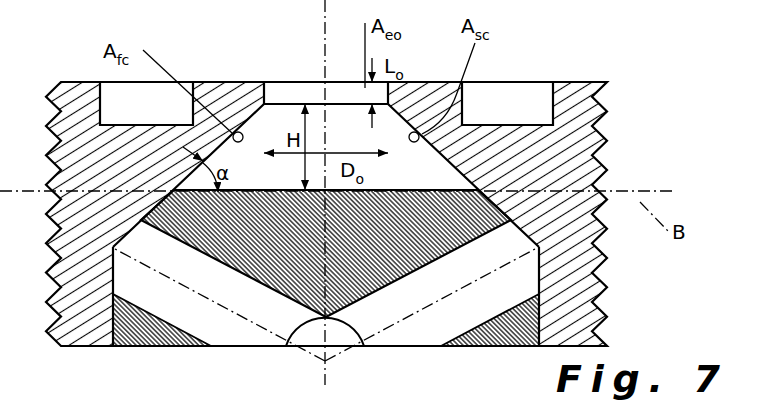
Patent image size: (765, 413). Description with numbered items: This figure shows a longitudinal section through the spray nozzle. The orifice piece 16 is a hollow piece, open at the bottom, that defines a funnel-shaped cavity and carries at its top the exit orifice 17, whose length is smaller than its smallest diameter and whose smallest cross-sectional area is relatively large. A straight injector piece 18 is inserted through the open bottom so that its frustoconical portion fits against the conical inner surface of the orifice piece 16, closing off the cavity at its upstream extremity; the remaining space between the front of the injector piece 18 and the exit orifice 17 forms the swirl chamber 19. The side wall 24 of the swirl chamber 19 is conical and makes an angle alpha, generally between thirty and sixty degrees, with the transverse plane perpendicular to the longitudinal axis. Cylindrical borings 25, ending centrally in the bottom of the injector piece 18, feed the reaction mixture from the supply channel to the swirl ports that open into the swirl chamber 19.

The orifice piece 16 is at (558, 182).
The exit orifice 17 is at (358, 90).
The injector piece 18 is at (262, 243).
The swirl chamber 19 is at (331, 130).
The side wall 24 is at (260, 191).
The cylindrical boring 25 is at (398, 306).